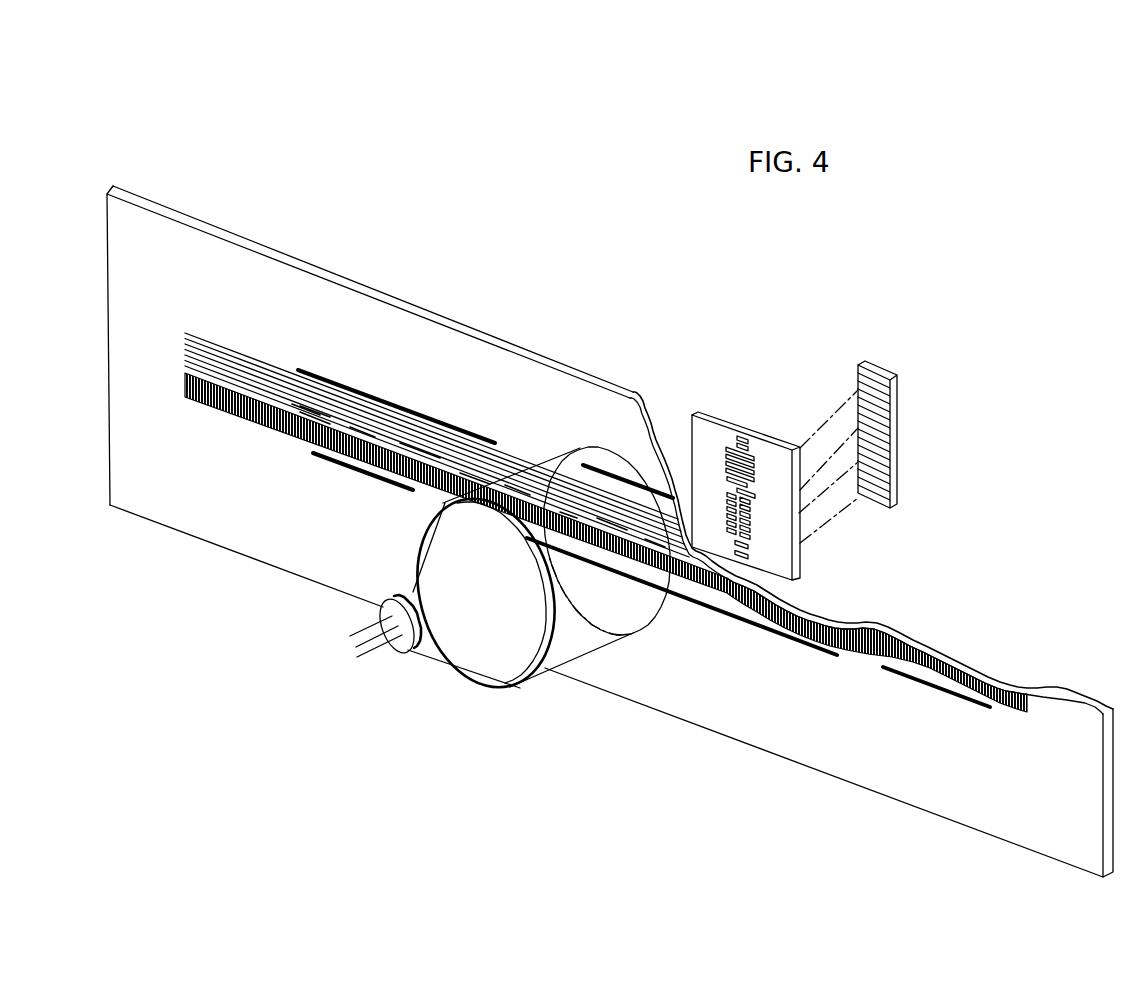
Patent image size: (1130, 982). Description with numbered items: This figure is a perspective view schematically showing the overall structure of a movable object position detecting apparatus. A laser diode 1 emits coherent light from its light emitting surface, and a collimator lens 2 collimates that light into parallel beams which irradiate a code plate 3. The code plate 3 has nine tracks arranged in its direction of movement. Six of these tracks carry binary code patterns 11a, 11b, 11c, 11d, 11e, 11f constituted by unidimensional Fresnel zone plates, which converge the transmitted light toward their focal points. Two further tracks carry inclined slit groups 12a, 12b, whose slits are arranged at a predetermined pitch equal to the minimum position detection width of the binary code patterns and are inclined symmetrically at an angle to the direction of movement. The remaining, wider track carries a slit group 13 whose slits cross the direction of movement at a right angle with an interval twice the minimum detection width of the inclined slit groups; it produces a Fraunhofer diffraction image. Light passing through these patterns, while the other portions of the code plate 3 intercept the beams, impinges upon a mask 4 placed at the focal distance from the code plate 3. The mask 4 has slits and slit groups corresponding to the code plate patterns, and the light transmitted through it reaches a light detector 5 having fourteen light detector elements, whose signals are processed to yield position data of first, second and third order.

The laser diode 1 is at (406, 646).
The collimator lens 2 is at (497, 680).
The code plate 3 is at (268, 246).
The mask 4 is at (708, 415).
The light detector 5 is at (893, 480).
The binary code pattern 11a is at (607, 470).
The binary code pattern 11b is at (300, 370).
The binary code pattern 11c is at (293, 407).
The binary code pattern 11d is at (305, 417).
The binary code pattern 11e is at (340, 463).
The binary code pattern 11f is at (760, 628).
The inclined slit group 12a is at (200, 334).
The inclined slit group 12b is at (186, 354).
The slit group 13 is at (200, 402).